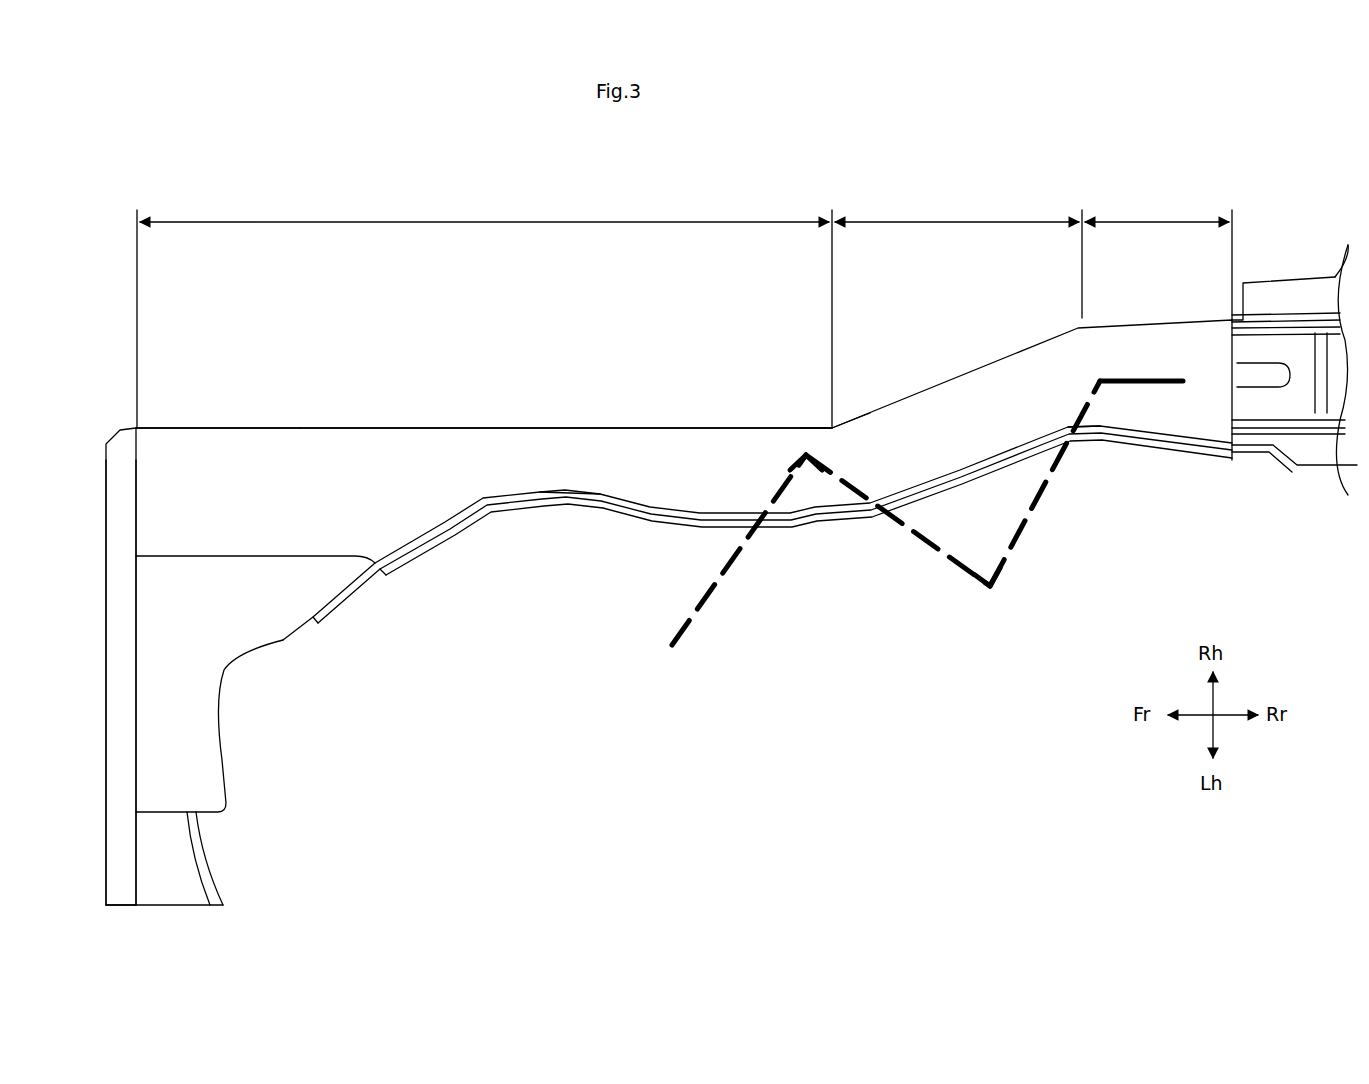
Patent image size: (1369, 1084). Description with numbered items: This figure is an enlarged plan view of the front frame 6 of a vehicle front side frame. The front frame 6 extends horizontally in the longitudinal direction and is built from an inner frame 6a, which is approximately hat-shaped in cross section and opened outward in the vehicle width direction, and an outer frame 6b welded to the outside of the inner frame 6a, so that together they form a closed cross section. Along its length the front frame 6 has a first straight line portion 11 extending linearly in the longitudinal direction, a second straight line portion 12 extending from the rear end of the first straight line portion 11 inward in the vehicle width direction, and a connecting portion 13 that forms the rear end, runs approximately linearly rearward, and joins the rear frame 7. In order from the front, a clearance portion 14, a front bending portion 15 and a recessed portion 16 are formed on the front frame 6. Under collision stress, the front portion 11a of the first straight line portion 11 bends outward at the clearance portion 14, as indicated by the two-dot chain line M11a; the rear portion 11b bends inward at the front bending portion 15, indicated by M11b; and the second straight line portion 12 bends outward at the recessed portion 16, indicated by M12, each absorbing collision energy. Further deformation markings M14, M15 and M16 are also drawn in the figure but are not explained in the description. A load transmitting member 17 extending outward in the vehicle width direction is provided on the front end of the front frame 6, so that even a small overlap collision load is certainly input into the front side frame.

The front frame 6 is at (257, 426).
The inner frame 6a is at (428, 450).
The outer frame 6b is at (437, 532).
The rear frame 7 is at (1292, 302).
The first straight line portion 11 is at (484, 311).
The front portion of the first straight line portion 11a is at (354, 462).
The rear portion of the first straight line portion 11b is at (710, 462).
The second straight line portion 12 is at (958, 256).
The connecting portion 13 is at (1158, 258).
The clearance portion 14 is at (562, 514).
The front bending portion 15 is at (826, 425).
The recessed portion 16 is at (1087, 442).
The load transmitting member 17 is at (100, 627).
The bending line of the front portion M11a is at (692, 636).
The bending line of the rear portion M11b is at (936, 550).
The bending line of the second straight line portion M12 is at (1010, 566).
The load transfer point M14 is at (806, 464).
The load transfer point M15 is at (992, 592).
The load path line M16 is at (1118, 405).